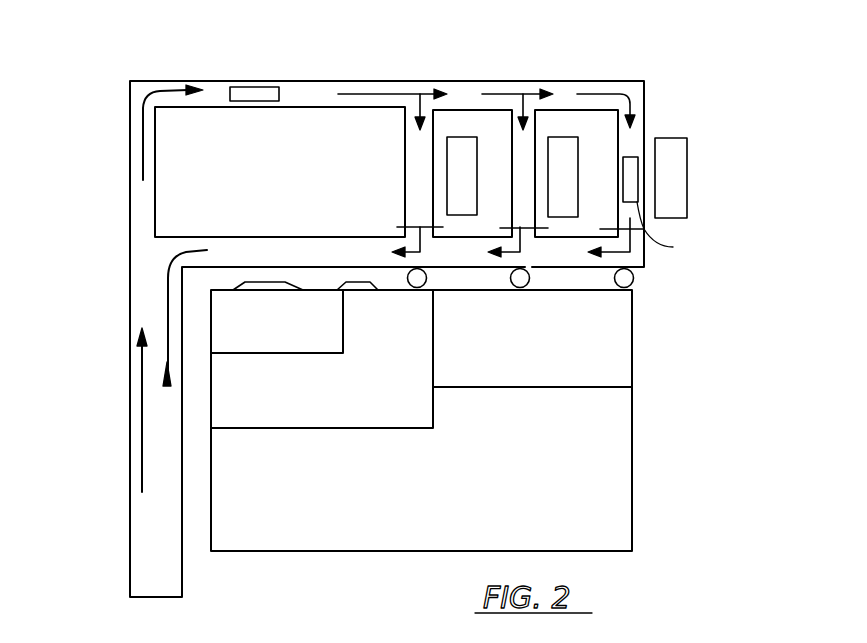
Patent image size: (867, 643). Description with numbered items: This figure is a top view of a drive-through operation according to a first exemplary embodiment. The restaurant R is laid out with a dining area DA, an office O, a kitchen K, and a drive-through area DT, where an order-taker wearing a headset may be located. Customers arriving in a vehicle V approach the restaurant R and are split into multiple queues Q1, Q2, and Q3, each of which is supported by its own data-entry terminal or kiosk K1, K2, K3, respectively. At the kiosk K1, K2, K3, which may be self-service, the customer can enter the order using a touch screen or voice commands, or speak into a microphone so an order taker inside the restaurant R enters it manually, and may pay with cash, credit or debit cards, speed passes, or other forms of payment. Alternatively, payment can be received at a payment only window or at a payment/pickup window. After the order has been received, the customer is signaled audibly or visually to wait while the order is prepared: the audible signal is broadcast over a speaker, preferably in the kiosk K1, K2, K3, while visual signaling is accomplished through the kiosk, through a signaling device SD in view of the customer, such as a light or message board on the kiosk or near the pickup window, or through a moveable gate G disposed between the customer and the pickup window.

The vehicle V is at (261, 86).
The queue Q3 is at (438, 90).
The data-entry terminal/kiosk K3 is at (462, 137).
The queue Q2 is at (552, 88).
The data-entry terminal/kiosk K2 is at (565, 137).
The queue Q1 is at (636, 107).
The data-entry terminal/kiosk K1 is at (688, 180).
The moveable gate G is at (397, 227).
The signaling device SD is at (427, 280).
The dining area DA is at (421, 416).
The drive-through area DT is at (277, 321).
The kitchen K is at (322, 359).
The office O is at (532, 360).
The restaurant R is at (668, 465).